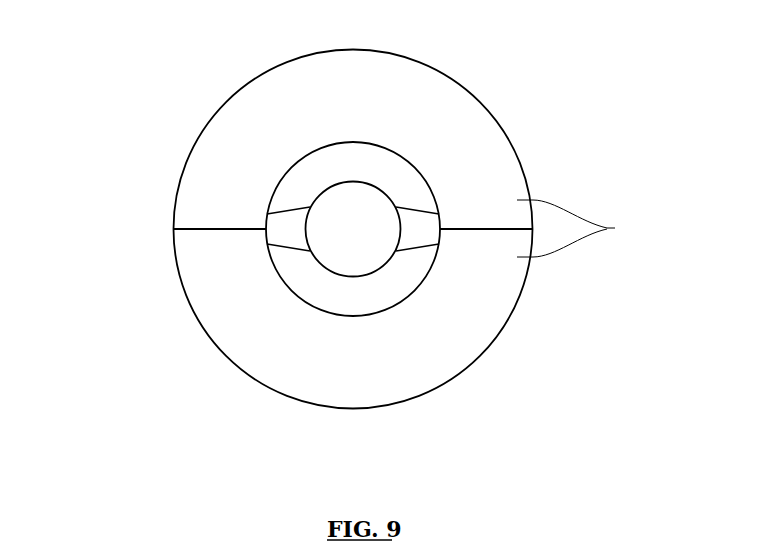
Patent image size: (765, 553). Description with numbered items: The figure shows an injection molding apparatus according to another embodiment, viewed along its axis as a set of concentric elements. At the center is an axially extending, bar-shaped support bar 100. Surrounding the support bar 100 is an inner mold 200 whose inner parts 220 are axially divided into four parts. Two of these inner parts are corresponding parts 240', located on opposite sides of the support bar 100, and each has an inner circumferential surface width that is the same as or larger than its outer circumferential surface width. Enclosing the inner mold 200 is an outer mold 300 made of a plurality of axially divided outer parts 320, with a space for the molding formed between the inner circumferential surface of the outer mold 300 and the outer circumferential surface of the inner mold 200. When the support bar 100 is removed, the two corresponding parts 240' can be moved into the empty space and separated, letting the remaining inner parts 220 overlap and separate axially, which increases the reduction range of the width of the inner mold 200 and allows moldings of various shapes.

The support bar 100 is at (358, 212).
The inner mold 200 is at (292, 164).
The inner parts 220 is at (345, 155).
The corresponding parts 240' is at (359, 295).
The outer mold 300 is at (178, 149).
The outer parts 320 is at (587, 228).